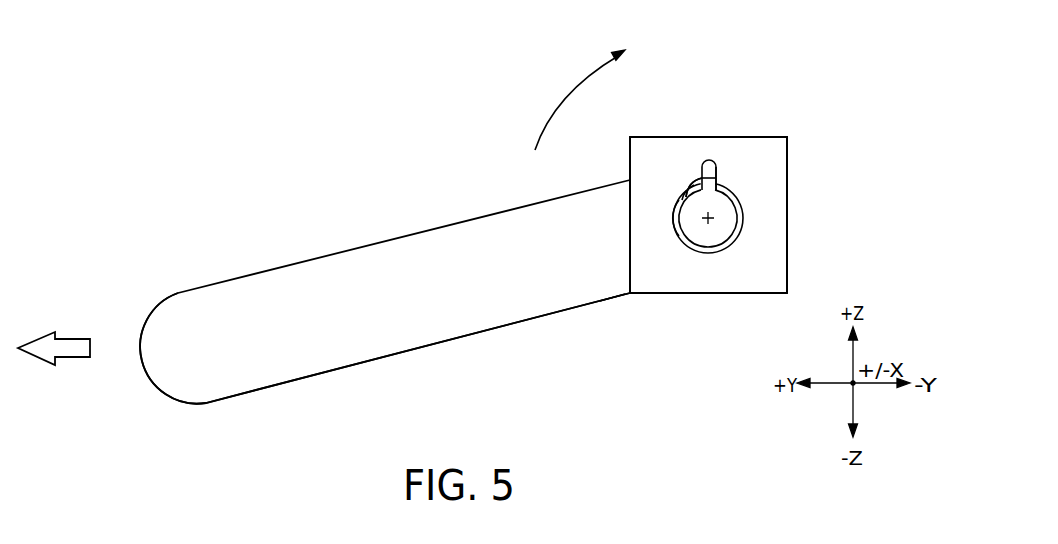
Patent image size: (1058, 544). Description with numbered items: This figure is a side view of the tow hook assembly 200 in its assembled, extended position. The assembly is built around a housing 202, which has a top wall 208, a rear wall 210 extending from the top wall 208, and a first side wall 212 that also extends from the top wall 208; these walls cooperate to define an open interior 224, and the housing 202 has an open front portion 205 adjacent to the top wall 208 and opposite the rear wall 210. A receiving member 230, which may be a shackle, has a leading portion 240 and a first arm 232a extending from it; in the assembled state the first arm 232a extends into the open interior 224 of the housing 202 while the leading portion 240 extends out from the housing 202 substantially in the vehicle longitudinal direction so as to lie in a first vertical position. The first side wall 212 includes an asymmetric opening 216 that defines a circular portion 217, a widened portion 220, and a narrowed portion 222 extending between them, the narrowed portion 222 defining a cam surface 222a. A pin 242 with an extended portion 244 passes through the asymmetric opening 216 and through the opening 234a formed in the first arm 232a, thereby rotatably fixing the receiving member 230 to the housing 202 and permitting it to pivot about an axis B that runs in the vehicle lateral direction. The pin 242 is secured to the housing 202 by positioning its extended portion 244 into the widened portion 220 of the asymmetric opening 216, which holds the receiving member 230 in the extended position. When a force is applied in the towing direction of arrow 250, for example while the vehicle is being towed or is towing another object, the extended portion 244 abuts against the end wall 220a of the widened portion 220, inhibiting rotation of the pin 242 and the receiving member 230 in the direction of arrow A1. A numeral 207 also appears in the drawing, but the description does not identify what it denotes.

The tow hook assembly 200 is at (820, 83).
The housing 202 is at (764, 125).
The open front portion 205 is at (616, 225).
The housing bottom wall 207 is at (744, 308).
The top wall 208 is at (787, 137).
The rear wall 210 is at (788, 160).
The first side wall 212 is at (723, 291).
The asymmetric opening 216 is at (680, 163).
The circular portion 217 is at (732, 246).
The widened portion 220 is at (703, 160).
The end wall 220a is at (713, 173).
The narrowed portion 222 is at (696, 181).
The cam surface 222a is at (694, 185).
The open interior 224 is at (630, 291).
The receiving member 230 is at (303, 258).
The first arm 232a is at (507, 312).
The opening 234a is at (664, 238).
The leading portion 240 is at (143, 383).
The pin 242 is at (692, 246).
The extended portion 244 is at (709, 179).
The arrow 250 is at (72, 338).
The arrow A1 is at (565, 100).
The axis B is at (715, 217).